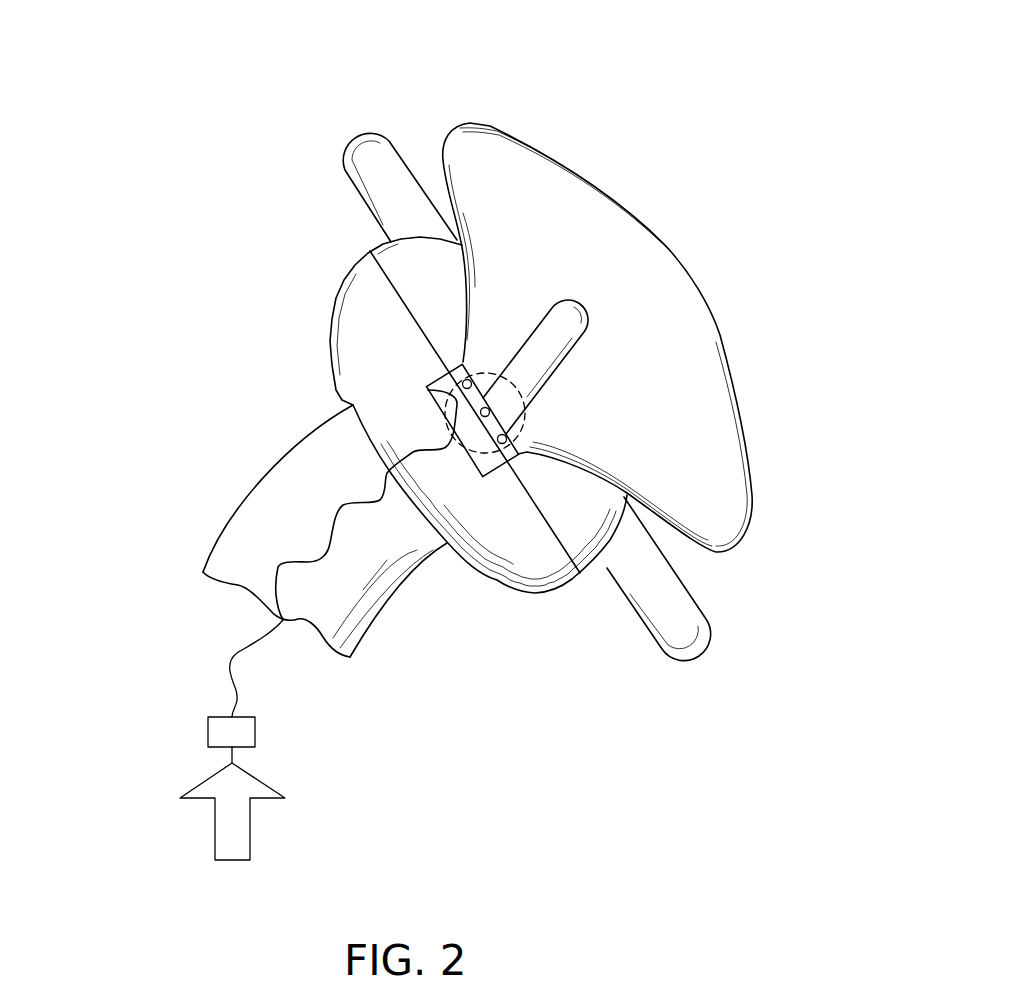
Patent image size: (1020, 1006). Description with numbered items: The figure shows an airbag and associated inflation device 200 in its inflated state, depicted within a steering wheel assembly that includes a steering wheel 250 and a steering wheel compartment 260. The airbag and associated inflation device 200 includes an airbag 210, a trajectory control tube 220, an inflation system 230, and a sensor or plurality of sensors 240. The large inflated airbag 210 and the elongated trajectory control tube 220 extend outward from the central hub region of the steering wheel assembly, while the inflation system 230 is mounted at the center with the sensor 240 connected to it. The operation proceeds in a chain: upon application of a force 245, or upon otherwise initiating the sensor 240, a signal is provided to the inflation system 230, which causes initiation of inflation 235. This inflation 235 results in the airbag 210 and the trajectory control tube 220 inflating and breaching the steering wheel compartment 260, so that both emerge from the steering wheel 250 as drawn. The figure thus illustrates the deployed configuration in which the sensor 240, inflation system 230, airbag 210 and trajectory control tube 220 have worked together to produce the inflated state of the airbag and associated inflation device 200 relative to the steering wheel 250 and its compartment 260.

The airbag and associated inflation device 200 is at (684, 117).
The airbag 210 is at (663, 280).
The trajectory control tube 220 is at (567, 331).
The inflation system 230 is at (428, 390).
The inflation 235 is at (460, 370).
The sensor 240 is at (217, 735).
The force 245 is at (215, 827).
The steering wheel 250 is at (375, 158).
The steering wheel compartment 260 is at (572, 533).